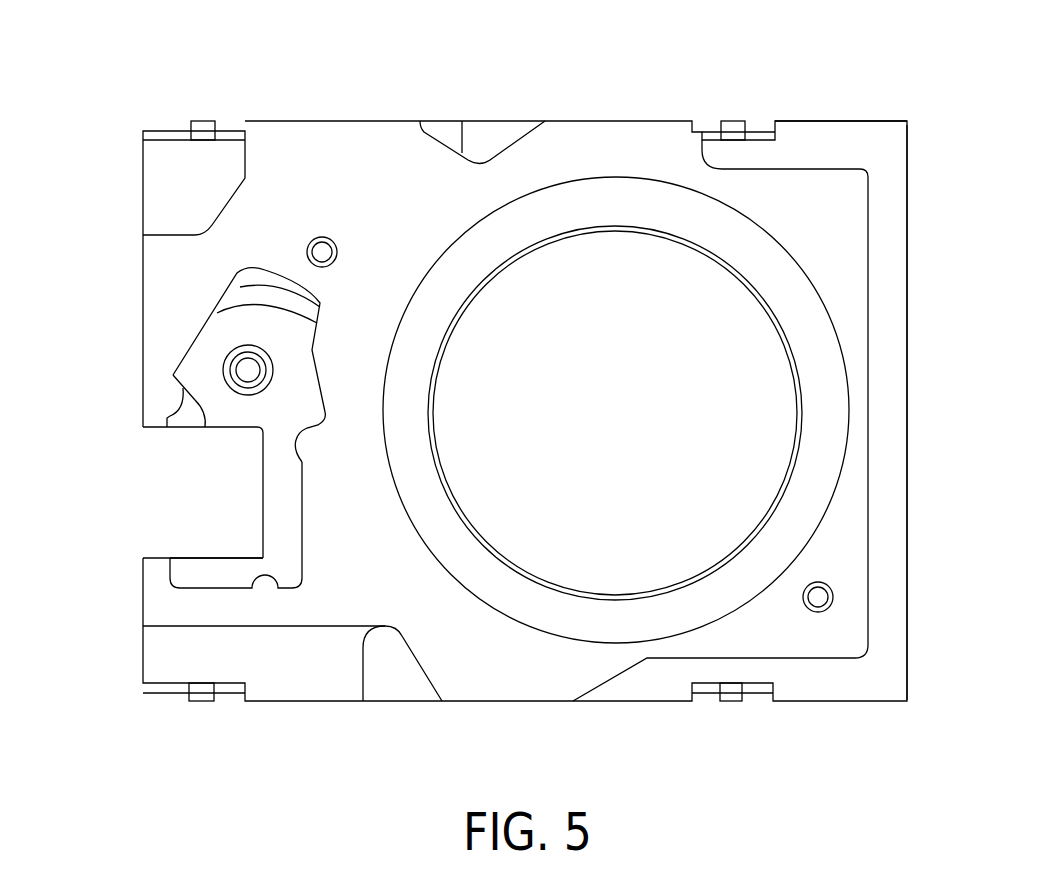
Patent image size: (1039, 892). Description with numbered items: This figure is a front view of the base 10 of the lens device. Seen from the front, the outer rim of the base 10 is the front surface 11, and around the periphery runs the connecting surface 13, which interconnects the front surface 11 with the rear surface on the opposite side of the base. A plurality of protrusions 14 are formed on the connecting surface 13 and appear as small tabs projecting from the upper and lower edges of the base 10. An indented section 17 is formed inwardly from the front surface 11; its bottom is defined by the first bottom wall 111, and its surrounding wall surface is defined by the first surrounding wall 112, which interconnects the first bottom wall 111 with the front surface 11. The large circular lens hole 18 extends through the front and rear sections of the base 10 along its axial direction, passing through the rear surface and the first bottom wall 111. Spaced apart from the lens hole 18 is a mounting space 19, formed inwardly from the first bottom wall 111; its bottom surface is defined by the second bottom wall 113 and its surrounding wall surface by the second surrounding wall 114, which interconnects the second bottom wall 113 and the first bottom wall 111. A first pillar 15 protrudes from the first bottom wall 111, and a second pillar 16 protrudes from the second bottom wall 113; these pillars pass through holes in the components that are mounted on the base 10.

The base 10 is at (375, 118).
The front surface 11 is at (897, 157).
The first bottom wall 111 is at (850, 198).
The first surrounding wall 112 is at (868, 230).
The second bottom wall 113 is at (193, 381).
The second surrounding wall 114 is at (170, 570).
The connecting surface 13 is at (826, 120).
The protrusions 14 is at (202, 120).
The first pillar 15 is at (322, 237).
The second pillar 16 is at (229, 353).
The indented section 17 is at (855, 262).
The lens hole 18 is at (517, 623).
The mounting space 19 is at (212, 498).